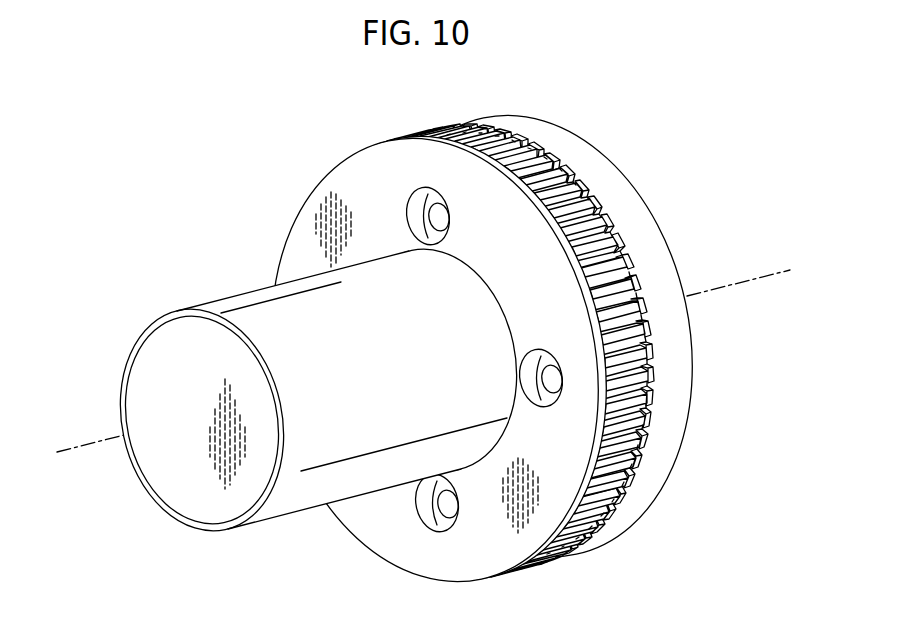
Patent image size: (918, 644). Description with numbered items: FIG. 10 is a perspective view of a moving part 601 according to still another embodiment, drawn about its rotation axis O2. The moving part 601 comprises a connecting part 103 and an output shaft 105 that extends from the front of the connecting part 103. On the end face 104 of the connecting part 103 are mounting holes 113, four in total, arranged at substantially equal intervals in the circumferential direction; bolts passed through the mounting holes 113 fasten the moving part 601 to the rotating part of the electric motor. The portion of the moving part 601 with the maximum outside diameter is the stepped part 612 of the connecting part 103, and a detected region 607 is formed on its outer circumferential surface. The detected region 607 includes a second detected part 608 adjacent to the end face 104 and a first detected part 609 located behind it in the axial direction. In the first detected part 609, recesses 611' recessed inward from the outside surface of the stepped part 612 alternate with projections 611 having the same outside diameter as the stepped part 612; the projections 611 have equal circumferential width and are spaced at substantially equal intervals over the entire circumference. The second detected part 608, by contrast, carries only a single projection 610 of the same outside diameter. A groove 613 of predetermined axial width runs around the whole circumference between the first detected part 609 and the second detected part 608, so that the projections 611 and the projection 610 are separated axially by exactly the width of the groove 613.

The moving part 601 is at (456, 331).
The detected region 607 is at (533, 328).
The second detected part 608 is at (559, 324).
The first detected part 609 is at (619, 267).
The projection 610 is at (514, 188).
The projections 611 is at (529, 149).
The recesses 611' is at (682, 334).
The stepped part 612 is at (434, 124).
The groove 613 is at (645, 311).
The connecting part 103 is at (433, 359).
The end face 104 is at (622, 531).
The output shaft 105 is at (242, 295).
The mounting holes 113 is at (411, 207).
The rotation axis O2 is at (67, 446).